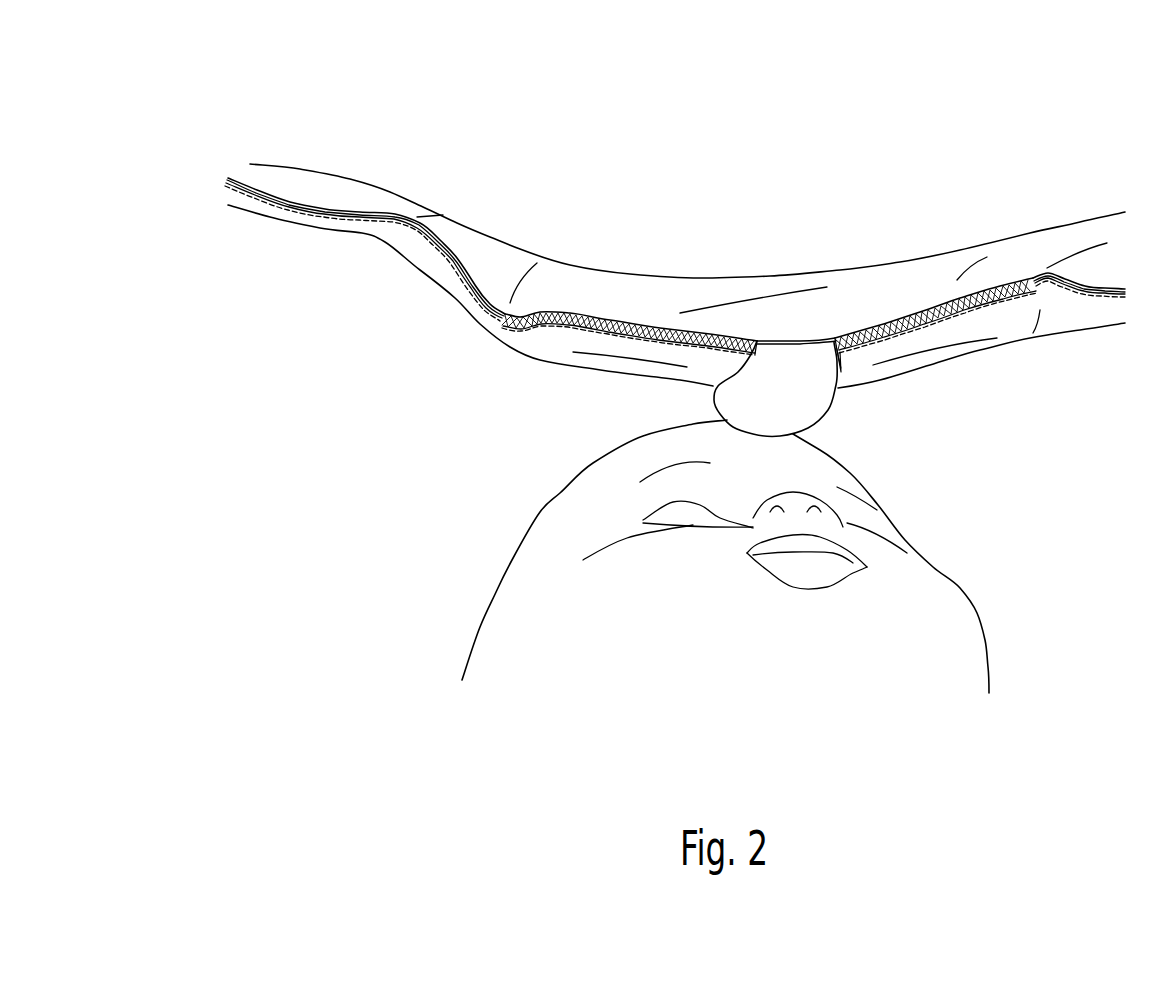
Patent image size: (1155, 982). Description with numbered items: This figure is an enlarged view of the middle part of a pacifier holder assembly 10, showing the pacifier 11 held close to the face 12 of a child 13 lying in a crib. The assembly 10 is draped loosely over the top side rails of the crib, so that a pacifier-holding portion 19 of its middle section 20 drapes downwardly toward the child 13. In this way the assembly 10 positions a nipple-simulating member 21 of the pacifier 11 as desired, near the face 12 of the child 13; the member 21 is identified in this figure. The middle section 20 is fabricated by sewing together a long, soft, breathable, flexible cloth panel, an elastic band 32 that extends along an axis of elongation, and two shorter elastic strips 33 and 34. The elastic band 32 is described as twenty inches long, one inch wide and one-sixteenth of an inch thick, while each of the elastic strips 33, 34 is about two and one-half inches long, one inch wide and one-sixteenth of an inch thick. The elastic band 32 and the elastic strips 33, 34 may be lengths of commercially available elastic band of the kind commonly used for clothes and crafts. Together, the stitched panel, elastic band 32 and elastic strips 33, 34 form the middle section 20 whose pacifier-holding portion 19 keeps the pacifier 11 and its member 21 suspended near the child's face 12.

The pacifier holder assembly 10 is at (259, 166).
The pacifier 11 is at (714, 405).
The face 12 is at (900, 557).
The child 13 is at (513, 556).
The pacifier-holding portion 19 is at (783, 287).
The middle section 20 is at (510, 250).
The nipple-simulating member 21 is at (803, 413).
The elastic band 32 is at (440, 247).
The elastic strip 33 is at (563, 323).
The elastic strip 34 is at (955, 302).